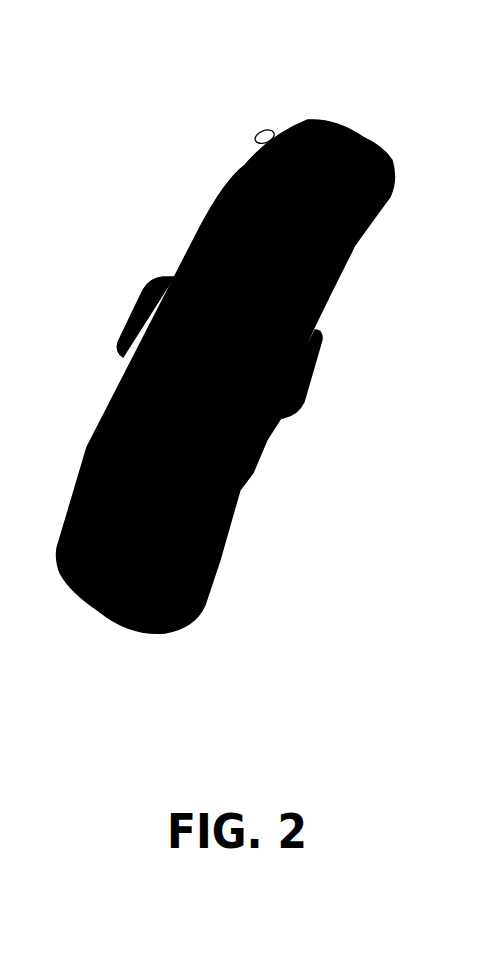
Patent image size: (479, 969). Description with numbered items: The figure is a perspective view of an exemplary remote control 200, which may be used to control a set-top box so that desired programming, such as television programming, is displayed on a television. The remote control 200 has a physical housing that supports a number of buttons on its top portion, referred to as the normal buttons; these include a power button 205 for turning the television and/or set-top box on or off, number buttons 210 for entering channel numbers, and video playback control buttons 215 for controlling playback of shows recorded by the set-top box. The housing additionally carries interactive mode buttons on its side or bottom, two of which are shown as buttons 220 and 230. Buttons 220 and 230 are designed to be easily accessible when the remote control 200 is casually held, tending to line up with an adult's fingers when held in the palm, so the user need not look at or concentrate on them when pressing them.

The remote control 200 is at (180, 82).
The power button 205 is at (383, 151).
The number buttons 210 is at (227, 147).
The video playback control buttons 215 is at (243, 424).
The button 220 is at (120, 342).
The button 230 is at (306, 374).